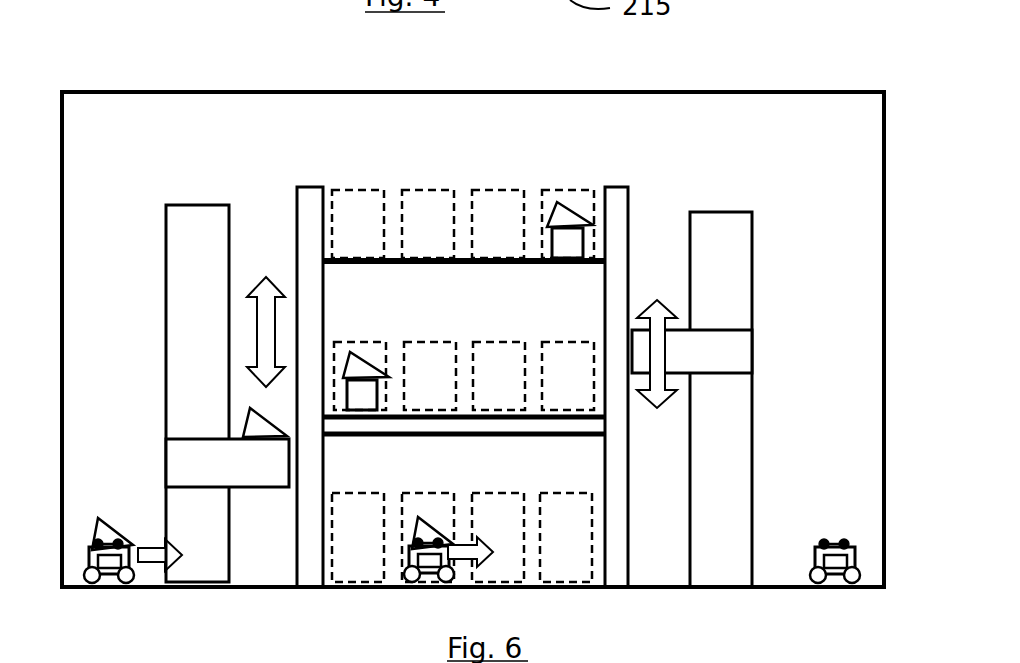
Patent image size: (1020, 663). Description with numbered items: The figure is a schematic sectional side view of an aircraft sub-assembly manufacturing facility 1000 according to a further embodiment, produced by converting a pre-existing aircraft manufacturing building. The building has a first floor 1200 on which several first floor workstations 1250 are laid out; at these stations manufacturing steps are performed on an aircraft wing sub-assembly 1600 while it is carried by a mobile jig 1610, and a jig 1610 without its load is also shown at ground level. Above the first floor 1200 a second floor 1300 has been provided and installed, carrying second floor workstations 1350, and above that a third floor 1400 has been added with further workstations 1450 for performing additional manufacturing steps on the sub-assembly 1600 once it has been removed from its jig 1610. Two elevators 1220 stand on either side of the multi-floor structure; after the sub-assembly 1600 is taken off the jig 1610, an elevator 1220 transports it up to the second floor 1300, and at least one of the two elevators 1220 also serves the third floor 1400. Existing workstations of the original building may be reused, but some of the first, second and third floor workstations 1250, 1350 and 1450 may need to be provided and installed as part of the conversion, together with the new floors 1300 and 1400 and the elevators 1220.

The aircraft sub-assembly manufacturing facility 1000 is at (93, 74).
The elevator 1220 is at (183, 248).
The third floor 1400 is at (390, 183).
The second floor 1300 is at (495, 323).
The second floor workstations 1350 is at (500, 403).
The third floor workstations 1450 is at (502, 242).
The first floor 1200 is at (490, 478).
The first floor workstations 1250 is at (352, 573).
The aircraft wing sub-assembly 1600 is at (557, 202).
The mobile jig 1610 is at (838, 543).